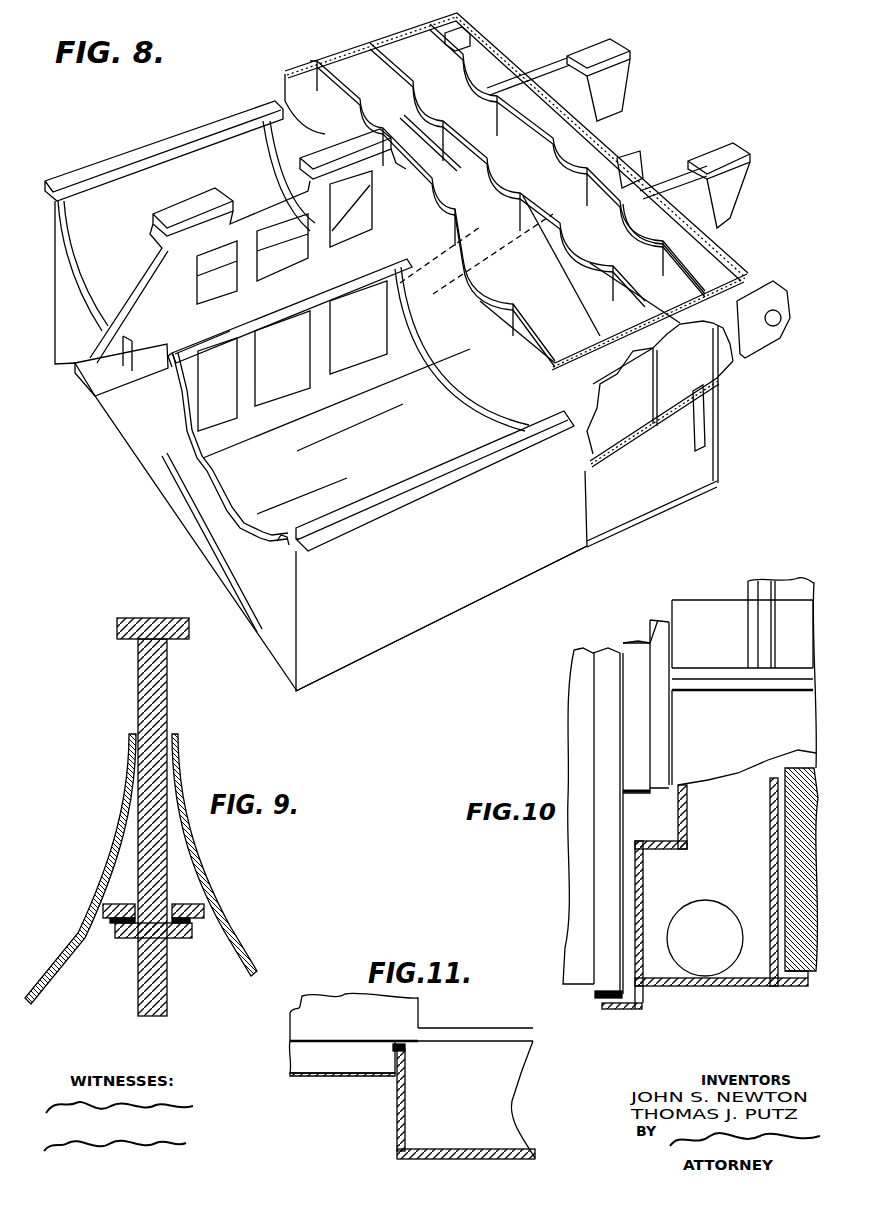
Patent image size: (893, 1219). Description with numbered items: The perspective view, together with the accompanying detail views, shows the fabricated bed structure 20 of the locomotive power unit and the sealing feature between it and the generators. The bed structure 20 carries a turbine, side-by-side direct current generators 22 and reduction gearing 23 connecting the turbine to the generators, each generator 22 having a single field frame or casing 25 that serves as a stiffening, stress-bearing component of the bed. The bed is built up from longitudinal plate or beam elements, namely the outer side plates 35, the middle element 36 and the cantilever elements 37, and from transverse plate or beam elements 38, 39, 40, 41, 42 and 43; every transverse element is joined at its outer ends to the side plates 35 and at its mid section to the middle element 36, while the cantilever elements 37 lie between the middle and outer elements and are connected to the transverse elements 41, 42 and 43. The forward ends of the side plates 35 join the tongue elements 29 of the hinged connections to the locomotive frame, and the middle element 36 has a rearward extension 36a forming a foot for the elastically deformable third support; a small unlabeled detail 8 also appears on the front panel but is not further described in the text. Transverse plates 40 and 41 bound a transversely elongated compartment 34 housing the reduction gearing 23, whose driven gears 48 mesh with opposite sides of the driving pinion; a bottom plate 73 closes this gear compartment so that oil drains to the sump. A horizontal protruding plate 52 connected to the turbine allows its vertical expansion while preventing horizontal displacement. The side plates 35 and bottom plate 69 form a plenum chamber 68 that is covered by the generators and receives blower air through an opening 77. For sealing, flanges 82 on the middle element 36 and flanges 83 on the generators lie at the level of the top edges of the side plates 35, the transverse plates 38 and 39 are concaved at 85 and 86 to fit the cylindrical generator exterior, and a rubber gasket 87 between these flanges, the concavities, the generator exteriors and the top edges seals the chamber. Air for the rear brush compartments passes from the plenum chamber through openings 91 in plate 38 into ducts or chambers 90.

In FIG. 8, the panel 8 is at (187, 340).
In FIG. 8, the fabricated bed structure 20 is at (447, 597).
In FIG. 10, the direct current generator 22 is at (549, 880).
In FIG. 11, the direct current generator 22 is at (317, 1005).
In FIG. 10, the reduction gearing 23 is at (804, 963).
In FIG. 9, the field frame or casing 25 is at (75, 918).
In FIG. 8, the tongue element 29 is at (487, 33).
In FIG. 8, the transversely elongated compartment 34 is at (410, 130).
In FIG. 8, the outer longitudinal plate or beam element 35 is at (70, 220).
In FIG. 8, the middle longitudinal plate or beam element 36 is at (270, 282).
In FIG. 9, the middle longitudinal plate or beam element 36 is at (152, 690).
In FIG. 8, the rearward extension 36a is at (110, 357).
In FIG. 8, the longitudinal cantilever plate or beam element 37 is at (547, 80).
In FIG. 8, the transverse plate or beam element 38 is at (223, 497).
In FIG. 11, the transverse plate or beam element 38 is at (397, 1088).
In FIG. 8, the transverse plate or beam element 39 is at (537, 333).
In FIG. 10, the transverse plate or beam element 39 is at (679, 805).
In FIG. 8, the transverse plate 40 is at (555, 293).
In FIG. 10, the transverse plate 40 is at (765, 830).
In FIG. 8, the transverse plate 41 is at (637, 297).
In FIG. 8, the transverse plate or beam element 42 is at (667, 248).
In FIG. 8, the transverse plate or beam element 43 is at (680, 220).
In FIG. 10, the driven gear 48 is at (785, 855).
In FIG. 8, the horizontal protruding plate 52 is at (637, 157).
In FIG. 8, the plenum chamber 68 is at (162, 170).
In FIG. 8, the bottom plate 69 is at (677, 503).
In FIG. 11, the bottom plate 69 is at (440, 1141).
In FIG. 8, the gear compartment bottom plate 73 is at (628, 430).
In FIG. 10, the gear compartment bottom plate 73 is at (725, 977).
In FIG. 8, the opening 77 is at (697, 413).
In FIG. 9, the flange 82 is at (172, 930).
In FIG. 9, the flange 83 is at (182, 893).
In FIG. 8, the concavity 85 is at (227, 510).
In FIG. 8, the concavity 86 is at (270, 148).
In FIG. 10, the concavity 86 is at (620, 1003).
In FIG. 9, the rubber gasket 87 is at (102, 911).
In FIG. 10, the rubber gasket 87 is at (594, 993).
In FIG. 11, the rubber gasket 87 is at (410, 1028).
In FIG. 11, the duct or chamber 90 is at (352, 1071).
In FIG. 8, the opening 91 is at (280, 542).
In FIG. 11, the opening 91 is at (399, 1041).